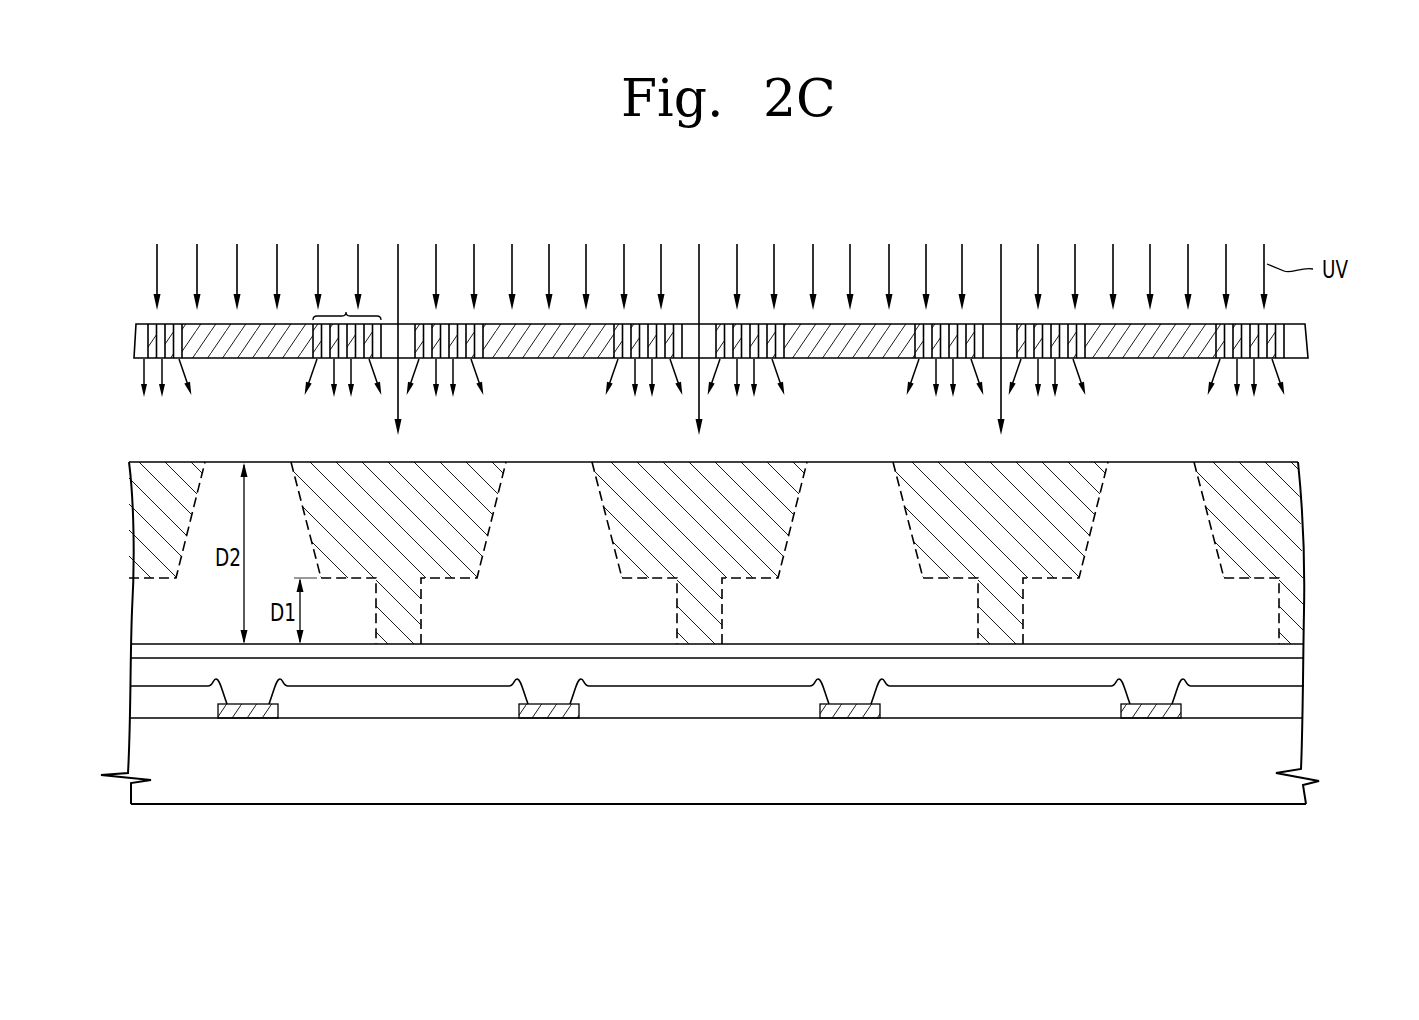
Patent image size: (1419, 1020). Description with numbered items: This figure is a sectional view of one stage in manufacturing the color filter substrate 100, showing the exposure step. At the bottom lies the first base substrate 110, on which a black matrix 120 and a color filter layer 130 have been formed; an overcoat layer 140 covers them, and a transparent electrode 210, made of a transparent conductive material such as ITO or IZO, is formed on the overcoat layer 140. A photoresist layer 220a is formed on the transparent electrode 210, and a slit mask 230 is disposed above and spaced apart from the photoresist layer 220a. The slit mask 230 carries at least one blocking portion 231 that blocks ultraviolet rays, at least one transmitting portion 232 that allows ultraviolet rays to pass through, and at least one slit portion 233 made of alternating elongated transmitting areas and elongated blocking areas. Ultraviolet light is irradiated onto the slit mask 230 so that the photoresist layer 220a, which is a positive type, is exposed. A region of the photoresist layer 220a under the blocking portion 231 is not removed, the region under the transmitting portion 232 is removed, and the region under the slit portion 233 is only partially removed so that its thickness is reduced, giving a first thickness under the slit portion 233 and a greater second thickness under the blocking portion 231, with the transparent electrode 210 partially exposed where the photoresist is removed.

The color filter substrate 100 is at (1147, 158).
The first base substrate 110 is at (1290, 747).
The black matrix 120 is at (1150, 718).
The color filter layer 130 is at (1293, 703).
The overcoat layer 140 is at (1295, 668).
The transparent electrode 210 is at (1295, 648).
The photoresist layer 220a is at (1193, 532).
The slit mask 230 is at (1300, 345).
The blocking portion 231 is at (257, 337).
The transmitting portion 232 is at (411, 331).
The slit portion 233 is at (345, 311).